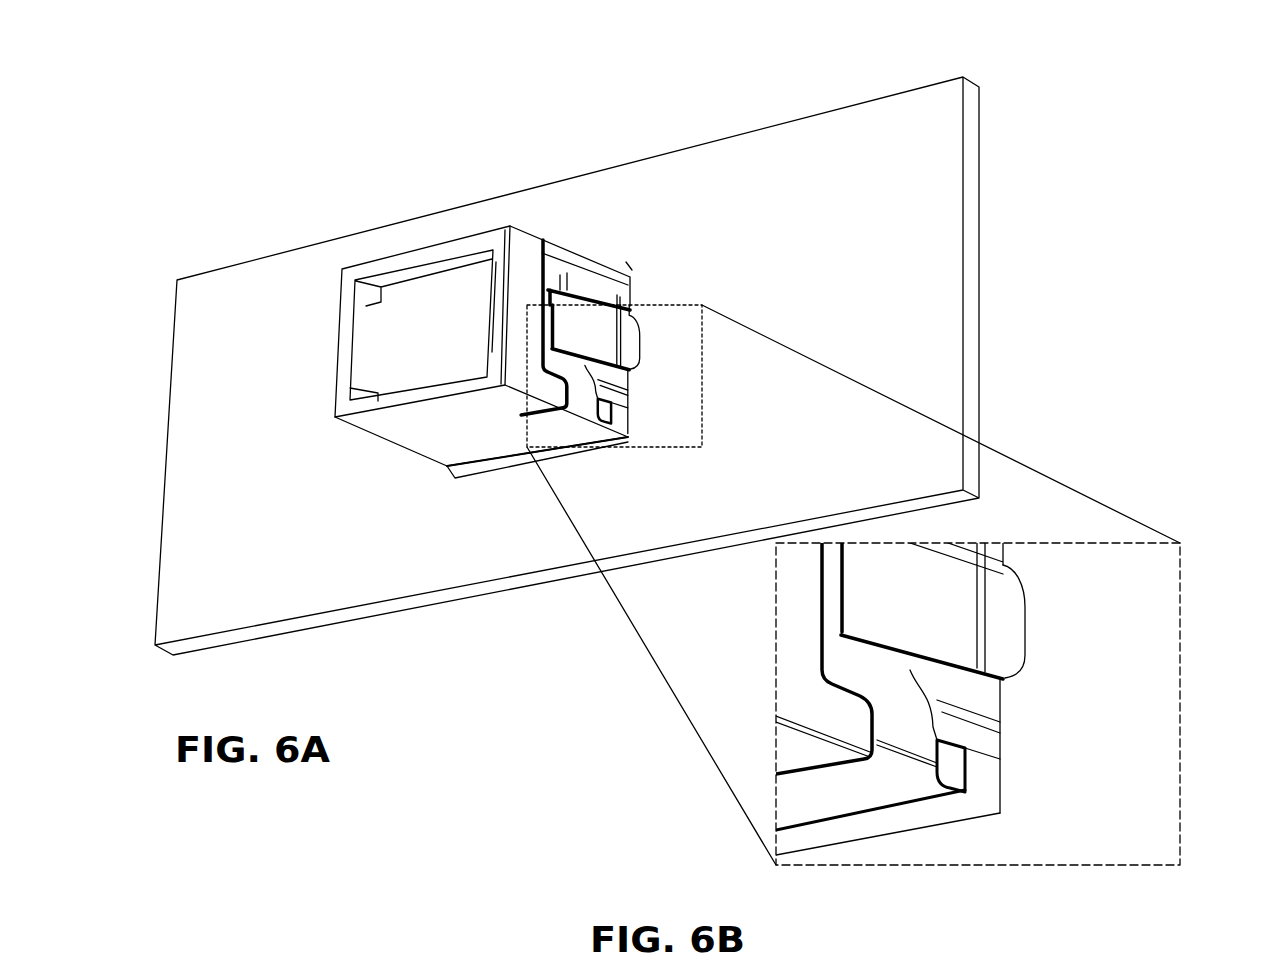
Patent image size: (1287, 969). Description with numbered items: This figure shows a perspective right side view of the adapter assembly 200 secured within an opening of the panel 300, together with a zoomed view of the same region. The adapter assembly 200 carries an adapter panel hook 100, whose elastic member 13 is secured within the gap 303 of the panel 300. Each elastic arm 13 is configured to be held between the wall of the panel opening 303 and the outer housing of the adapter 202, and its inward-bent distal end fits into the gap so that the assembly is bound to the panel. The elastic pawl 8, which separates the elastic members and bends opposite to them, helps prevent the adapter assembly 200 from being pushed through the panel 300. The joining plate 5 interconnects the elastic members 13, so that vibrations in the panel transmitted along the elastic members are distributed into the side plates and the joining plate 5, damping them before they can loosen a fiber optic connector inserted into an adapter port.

In FIG. 6A, the panel 300 is at (918, 205).
In FIG. 6A, the adapter assembly 200 is at (357, 272).
In FIG. 6A, the outer housing of adapter 202 is at (383, 420).
In FIG. 6A, the adapter panel hook 100 is at (595, 330).
In FIG. 6A, the panel opening or gap 303 is at (632, 270).
In FIG. 6B, the panel opening or gap 303 is at (993, 707).
In FIG. 6B, the elastic pawl 8 is at (985, 633).
In FIG. 6B, the elastic member 13 is at (983, 725).
In FIG. 6B, the joining plate 5 is at (830, 815).